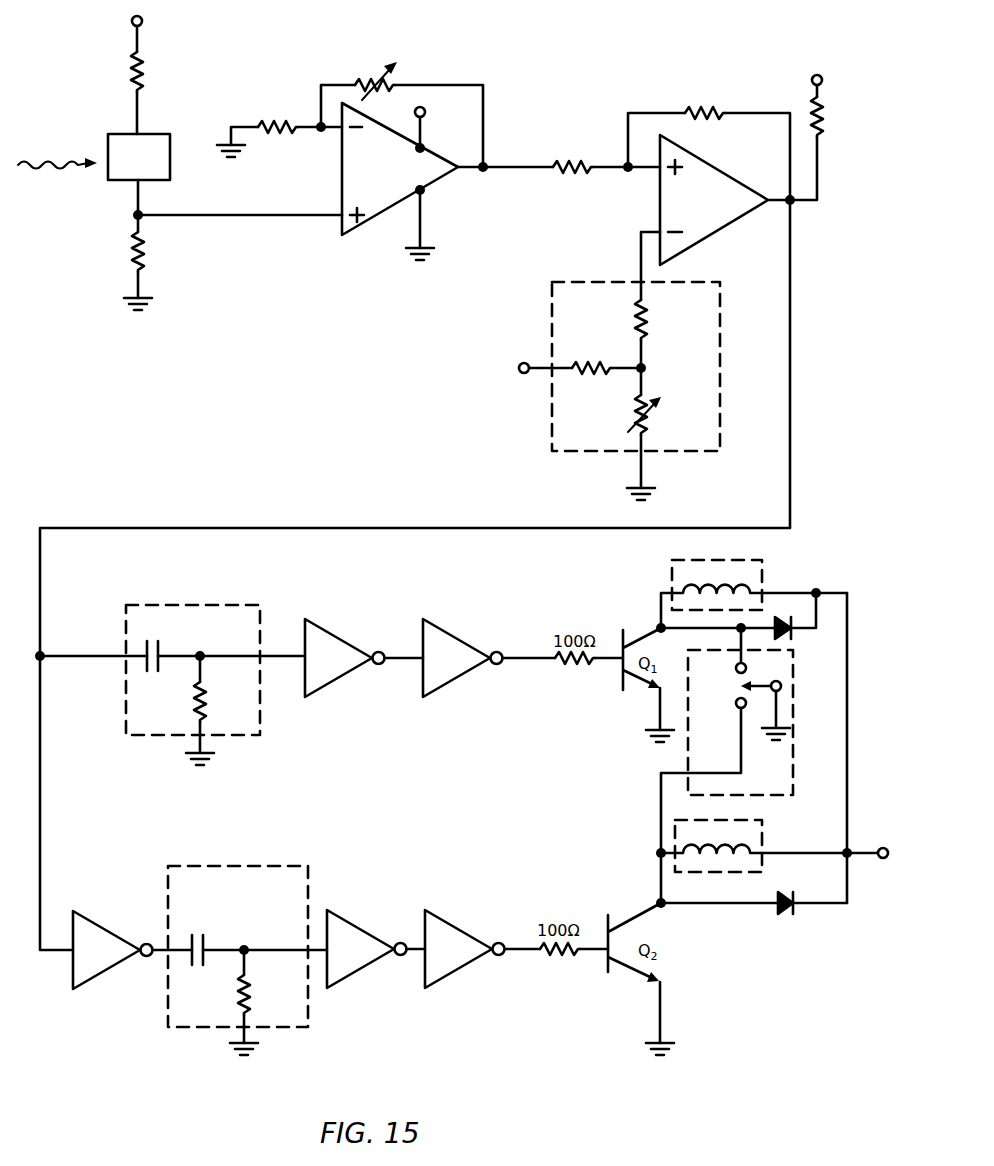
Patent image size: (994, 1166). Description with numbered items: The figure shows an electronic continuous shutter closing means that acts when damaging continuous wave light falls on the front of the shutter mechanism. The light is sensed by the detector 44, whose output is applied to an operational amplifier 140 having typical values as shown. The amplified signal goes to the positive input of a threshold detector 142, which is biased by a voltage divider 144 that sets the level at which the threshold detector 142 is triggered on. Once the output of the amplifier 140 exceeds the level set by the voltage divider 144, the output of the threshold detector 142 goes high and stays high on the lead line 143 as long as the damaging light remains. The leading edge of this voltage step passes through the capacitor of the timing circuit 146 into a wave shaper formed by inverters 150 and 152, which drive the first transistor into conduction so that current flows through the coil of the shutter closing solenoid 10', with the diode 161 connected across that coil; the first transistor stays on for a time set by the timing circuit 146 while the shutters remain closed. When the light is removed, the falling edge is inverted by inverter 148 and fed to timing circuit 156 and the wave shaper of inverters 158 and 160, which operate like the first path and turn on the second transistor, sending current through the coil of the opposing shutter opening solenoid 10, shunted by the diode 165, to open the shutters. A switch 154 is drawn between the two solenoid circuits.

The detector 44 is at (116, 133).
The operational amplifier 140 is at (380, 120).
The threshold detector 142 is at (704, 240).
The lead line 143 is at (343, 527).
The voltage divider 144 is at (721, 379).
The timing circuit 146 is at (125, 713).
The inverter 148 is at (80, 912).
The inverter 150 is at (320, 628).
The inverter 152 is at (440, 628).
The switch 154 is at (793, 758).
The timing circuit 156 is at (168, 1002).
The inverter 158 is at (352, 975).
The inverter 160 is at (460, 968).
The diode 161 is at (782, 617).
The diode 165 is at (784, 912).
The shutter opening solenoid 10 is at (786, 864).
The coil 10' is at (751, 585).